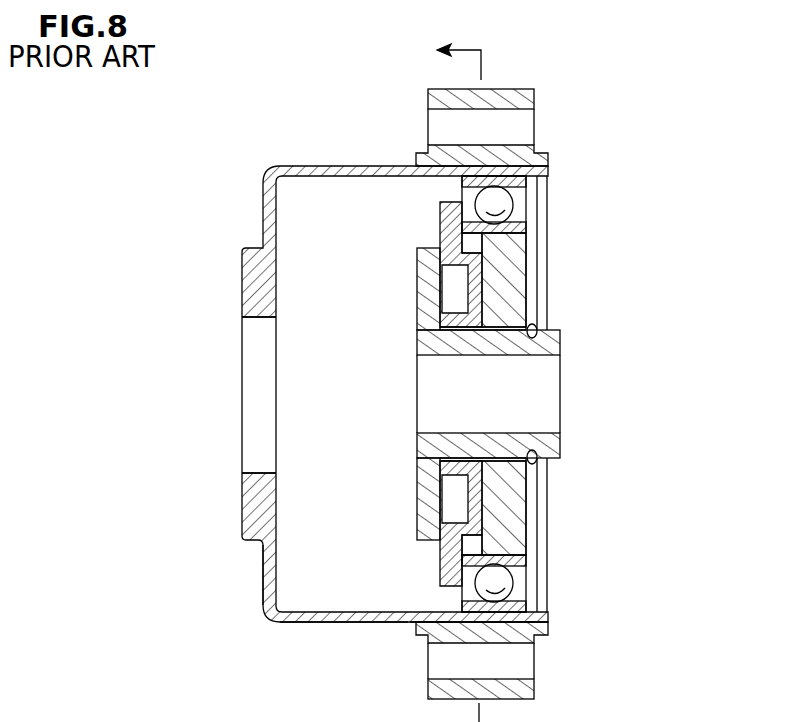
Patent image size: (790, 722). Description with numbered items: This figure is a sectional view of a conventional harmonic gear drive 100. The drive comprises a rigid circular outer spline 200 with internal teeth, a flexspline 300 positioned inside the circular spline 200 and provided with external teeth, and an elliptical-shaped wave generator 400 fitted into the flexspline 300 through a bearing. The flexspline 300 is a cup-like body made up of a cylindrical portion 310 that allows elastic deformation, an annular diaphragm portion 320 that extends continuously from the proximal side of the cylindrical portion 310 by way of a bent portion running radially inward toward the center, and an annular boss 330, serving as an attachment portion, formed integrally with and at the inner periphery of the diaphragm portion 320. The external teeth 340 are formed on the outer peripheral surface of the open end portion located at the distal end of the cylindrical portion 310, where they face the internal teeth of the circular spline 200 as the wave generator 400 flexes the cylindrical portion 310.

The harmonic gear drive 100 is at (567, 158).
The circular outer spline 200 is at (508, 89).
The flexspline 300 is at (330, 166).
The cylindrical portion 310 is at (408, 638).
The annular diaphragm portion 320 is at (237, 543).
The boss 330 is at (243, 492).
The external teeth 340 is at (548, 620).
The wave generator 400 is at (560, 343).